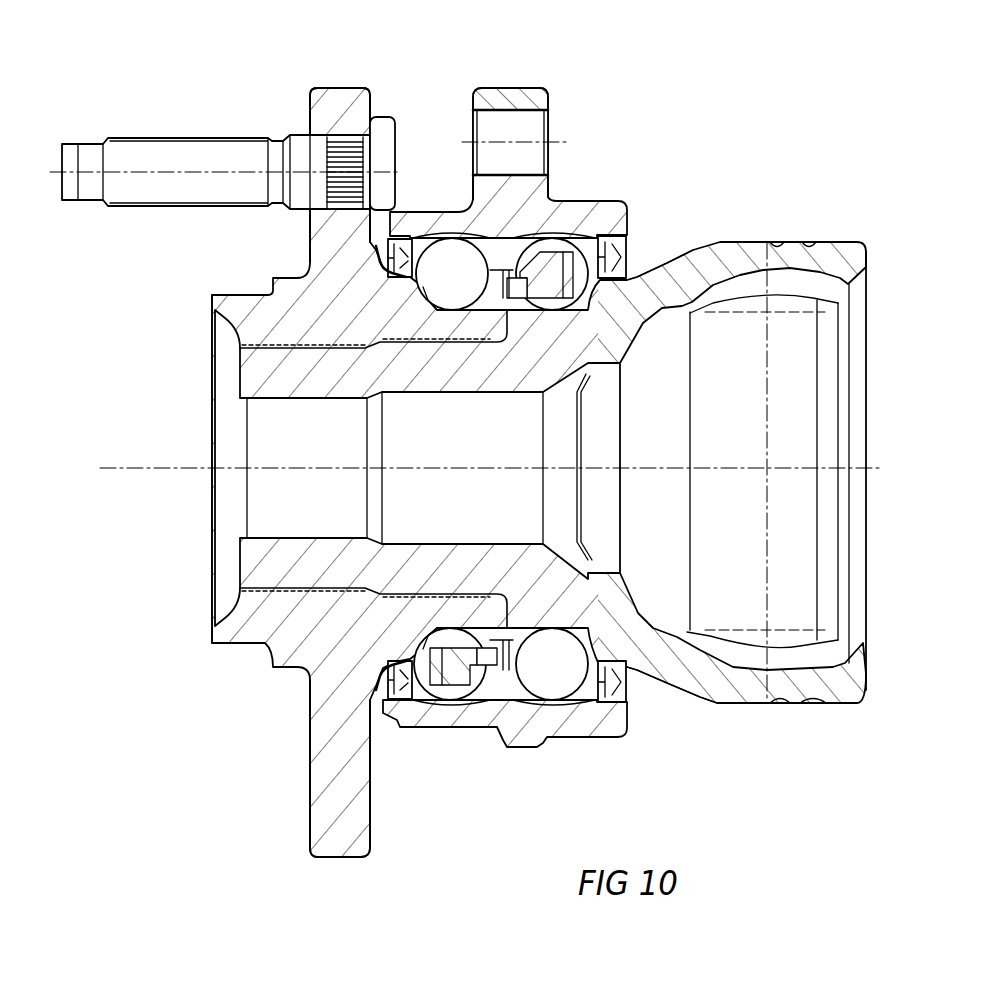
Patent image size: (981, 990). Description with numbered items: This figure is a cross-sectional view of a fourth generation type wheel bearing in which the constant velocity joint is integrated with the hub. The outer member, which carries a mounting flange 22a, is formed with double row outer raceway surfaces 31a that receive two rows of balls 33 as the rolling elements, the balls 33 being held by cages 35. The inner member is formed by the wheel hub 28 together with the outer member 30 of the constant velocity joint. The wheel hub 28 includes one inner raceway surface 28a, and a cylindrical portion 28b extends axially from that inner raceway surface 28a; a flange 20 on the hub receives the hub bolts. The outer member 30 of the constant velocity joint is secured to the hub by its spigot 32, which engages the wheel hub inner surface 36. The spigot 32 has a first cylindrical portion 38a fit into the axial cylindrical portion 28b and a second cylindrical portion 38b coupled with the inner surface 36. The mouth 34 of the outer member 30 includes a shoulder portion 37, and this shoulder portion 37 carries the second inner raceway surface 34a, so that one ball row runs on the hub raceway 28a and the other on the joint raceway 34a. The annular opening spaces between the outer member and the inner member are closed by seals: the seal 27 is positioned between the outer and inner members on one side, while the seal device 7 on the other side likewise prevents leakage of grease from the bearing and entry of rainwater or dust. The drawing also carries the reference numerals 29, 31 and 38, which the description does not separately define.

The seal device 7 is at (630, 685).
The flange 20 is at (348, 105).
The mounting flange 22a is at (497, 107).
The seal 27 is at (373, 730).
The wheel hub 28 is at (290, 310).
The inner raceway surface 28a is at (388, 250).
The cylindrical portion 28b is at (477, 327).
The wheel bearing 29 is at (411, 418).
The outer member of constant velocity joint 30 is at (499, 415).
The outer race 31 is at (511, 373).
The outer raceway surfaces 31a is at (428, 236).
The spigot 32 is at (257, 417).
The balls 33 is at (558, 690).
The mouth 34 is at (662, 263).
The second inner raceway surface 34a is at (574, 375).
The cages 35 is at (508, 597).
The wheel hub inner surface 36 is at (300, 358).
The shoulder portion 37 is at (600, 615).
The stem portion 38 is at (320, 469).
The first cylindrical portion 38a is at (427, 325).
The second cylindrical portion 38b is at (370, 402).